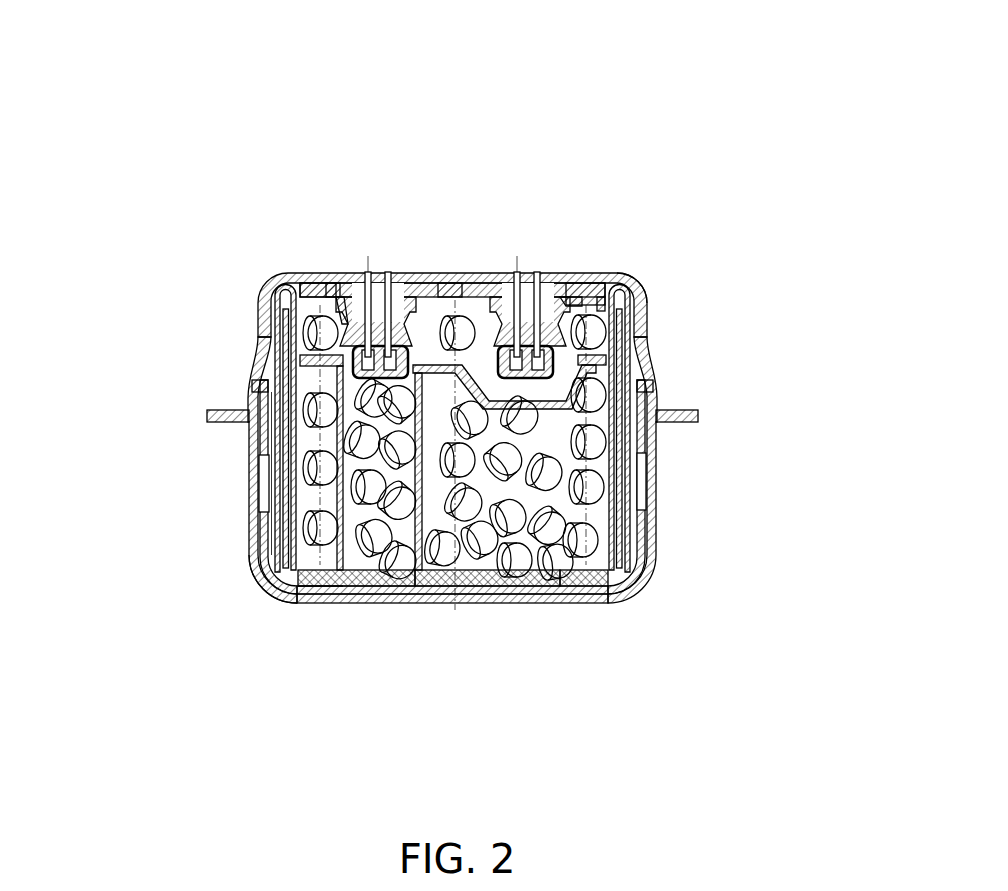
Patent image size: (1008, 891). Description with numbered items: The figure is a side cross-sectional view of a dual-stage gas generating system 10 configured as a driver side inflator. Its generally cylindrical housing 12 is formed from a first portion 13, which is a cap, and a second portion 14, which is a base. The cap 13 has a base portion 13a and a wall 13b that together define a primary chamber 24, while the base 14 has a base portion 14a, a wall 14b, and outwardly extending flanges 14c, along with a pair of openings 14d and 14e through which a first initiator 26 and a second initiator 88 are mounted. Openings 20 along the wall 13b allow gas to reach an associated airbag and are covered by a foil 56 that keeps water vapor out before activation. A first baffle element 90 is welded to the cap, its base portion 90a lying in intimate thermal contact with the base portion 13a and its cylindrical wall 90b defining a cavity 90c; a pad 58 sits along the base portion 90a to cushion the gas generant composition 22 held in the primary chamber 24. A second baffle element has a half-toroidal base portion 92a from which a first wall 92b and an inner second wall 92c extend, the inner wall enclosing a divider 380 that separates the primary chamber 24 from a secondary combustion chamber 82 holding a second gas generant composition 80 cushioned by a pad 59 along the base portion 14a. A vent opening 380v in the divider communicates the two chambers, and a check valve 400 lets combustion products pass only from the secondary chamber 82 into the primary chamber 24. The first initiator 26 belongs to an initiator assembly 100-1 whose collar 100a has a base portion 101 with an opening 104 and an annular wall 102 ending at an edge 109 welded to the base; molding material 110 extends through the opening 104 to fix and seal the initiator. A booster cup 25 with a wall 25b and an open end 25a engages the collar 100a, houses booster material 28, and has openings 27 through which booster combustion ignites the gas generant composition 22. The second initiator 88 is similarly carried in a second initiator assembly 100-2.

The gas generating system 10 is at (448, 390).
The housing 12 is at (258, 313).
The first portion 13 is at (637, 605).
The base portion 13a is at (586, 601).
The wall 13b is at (252, 443).
The second portion 14 is at (638, 268).
The base portion 14a is at (578, 280).
The wall 14b is at (612, 308).
The flanges 14c is at (698, 412).
The opening 14d is at (362, 292).
The opening 14e is at (552, 278).
The openings 20 is at (648, 480).
The gas generant composition 22 is at (636, 586).
The primary chamber 24 is at (560, 445).
The booster cup 25 is at (328, 498).
The open end 25a is at (436, 320).
The wall 25b is at (276, 602).
The first initiator 26 is at (389, 288).
The openings 27 is at (389, 580).
The booster material 28 is at (344, 590).
The foil 56 is at (262, 488).
The pad 58 is at (555, 578).
The pad 59 is at (298, 277).
The second gas generant composition 80 is at (592, 331).
The secondary combustion chamber 82 is at (606, 280).
The second initiator 88 is at (530, 285).
The first baffle element 90 is at (268, 314).
The base portion 90a is at (431, 582).
The cylindrical wall 90b is at (280, 530).
The cavity 90c is at (592, 488).
The base portion 92a is at (272, 300).
The first wall 92b is at (268, 565).
The second wall 92c is at (607, 530).
The initiator assembly 100-1 is at (338, 283).
The second initiator assembly 100-2 is at (501, 288).
The collar 100a is at (421, 288).
The base portion 101 is at (262, 325).
The annular wall 102 is at (450, 290).
The opening 104 is at (264, 345).
The edge 109 is at (332, 278).
The molding material 110 is at (327, 281).
The divider 380 is at (508, 568).
The vent opening 380v is at (465, 548).
The check valve 400 is at (434, 553).